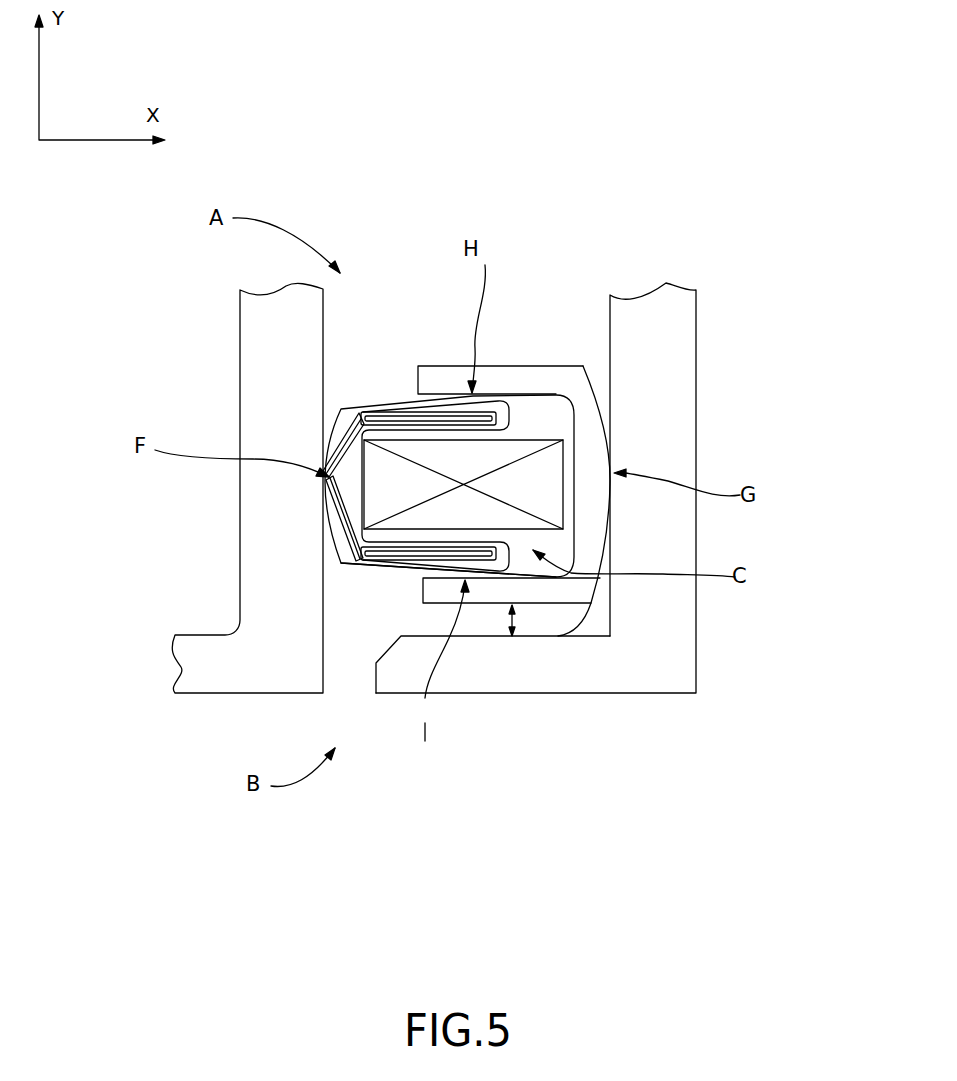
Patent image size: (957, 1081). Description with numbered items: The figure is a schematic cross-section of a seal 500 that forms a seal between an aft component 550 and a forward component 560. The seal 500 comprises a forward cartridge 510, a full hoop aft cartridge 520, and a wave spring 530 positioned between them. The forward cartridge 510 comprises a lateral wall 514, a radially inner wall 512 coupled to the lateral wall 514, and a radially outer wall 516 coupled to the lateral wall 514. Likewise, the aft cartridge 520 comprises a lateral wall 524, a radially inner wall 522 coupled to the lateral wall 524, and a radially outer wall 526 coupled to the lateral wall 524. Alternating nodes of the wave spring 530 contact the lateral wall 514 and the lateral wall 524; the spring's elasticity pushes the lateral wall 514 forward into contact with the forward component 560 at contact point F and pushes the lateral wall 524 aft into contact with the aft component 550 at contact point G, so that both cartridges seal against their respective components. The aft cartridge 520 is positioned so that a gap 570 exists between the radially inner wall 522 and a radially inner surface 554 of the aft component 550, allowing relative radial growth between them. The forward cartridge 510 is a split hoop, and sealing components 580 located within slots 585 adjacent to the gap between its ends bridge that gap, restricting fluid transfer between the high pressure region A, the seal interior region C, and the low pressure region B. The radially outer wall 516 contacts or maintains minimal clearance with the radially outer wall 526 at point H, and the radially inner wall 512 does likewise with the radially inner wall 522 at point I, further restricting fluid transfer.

The seal 500 is at (638, 162).
The forward cartridge 510 is at (449, 471).
The radially inner wall 512 is at (380, 565).
The lateral wall 514 is at (333, 429).
The radially outer wall 516 is at (383, 408).
The aft cartridge 520 is at (591, 471).
The radially inner wall 522 is at (490, 601).
The lateral wall 524 is at (597, 392).
The radially outer wall 526 is at (512, 363).
The wave spring 530 is at (560, 455).
The aft component 550 is at (693, 306).
The radially inner surface 554 is at (567, 634).
The forward component 560 is at (237, 319).
The gap 570 is at (512, 618).
The sealing components 580 is at (337, 525).
The slots 585 is at (360, 556).